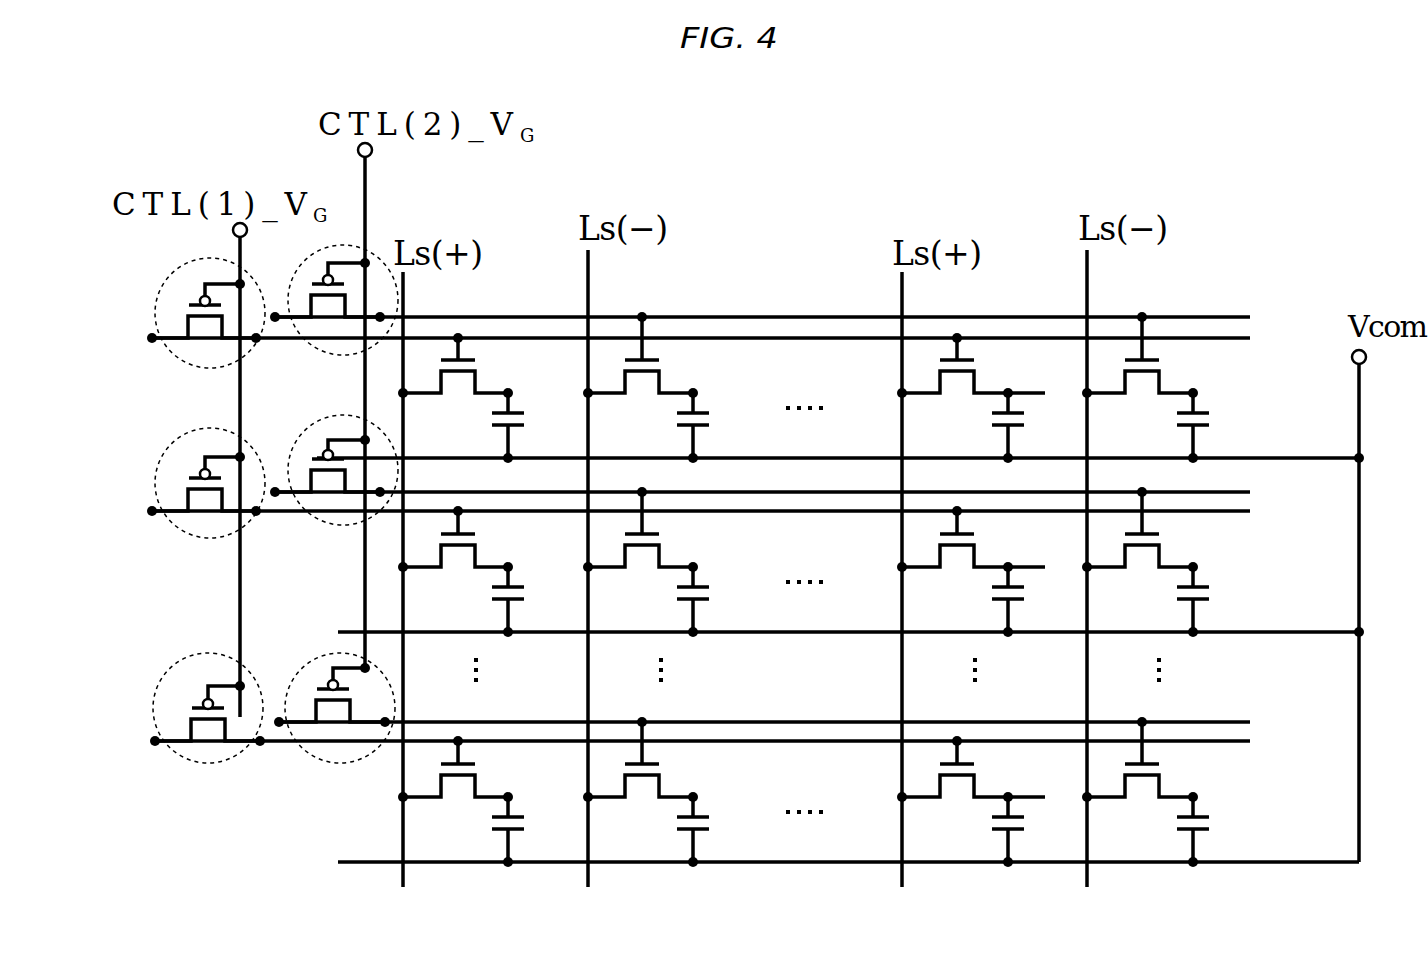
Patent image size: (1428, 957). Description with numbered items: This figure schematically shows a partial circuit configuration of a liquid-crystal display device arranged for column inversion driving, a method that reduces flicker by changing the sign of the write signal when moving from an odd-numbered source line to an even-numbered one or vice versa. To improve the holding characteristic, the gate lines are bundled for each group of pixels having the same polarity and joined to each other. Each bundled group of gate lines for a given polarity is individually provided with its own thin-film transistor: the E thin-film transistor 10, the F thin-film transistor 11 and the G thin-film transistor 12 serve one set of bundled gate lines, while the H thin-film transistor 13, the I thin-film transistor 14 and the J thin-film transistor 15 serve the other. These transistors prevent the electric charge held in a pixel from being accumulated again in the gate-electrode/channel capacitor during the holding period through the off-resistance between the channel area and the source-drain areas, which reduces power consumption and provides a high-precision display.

The E thin-film transistor 10 is at (157, 303).
The F thin-film transistor 11 is at (157, 477).
The G thin-film transistor 12 is at (155, 687).
The H thin-film transistor 13 is at (347, 244).
The I thin-film transistor 14 is at (323, 518).
The J thin-film transistor 15 is at (312, 757).